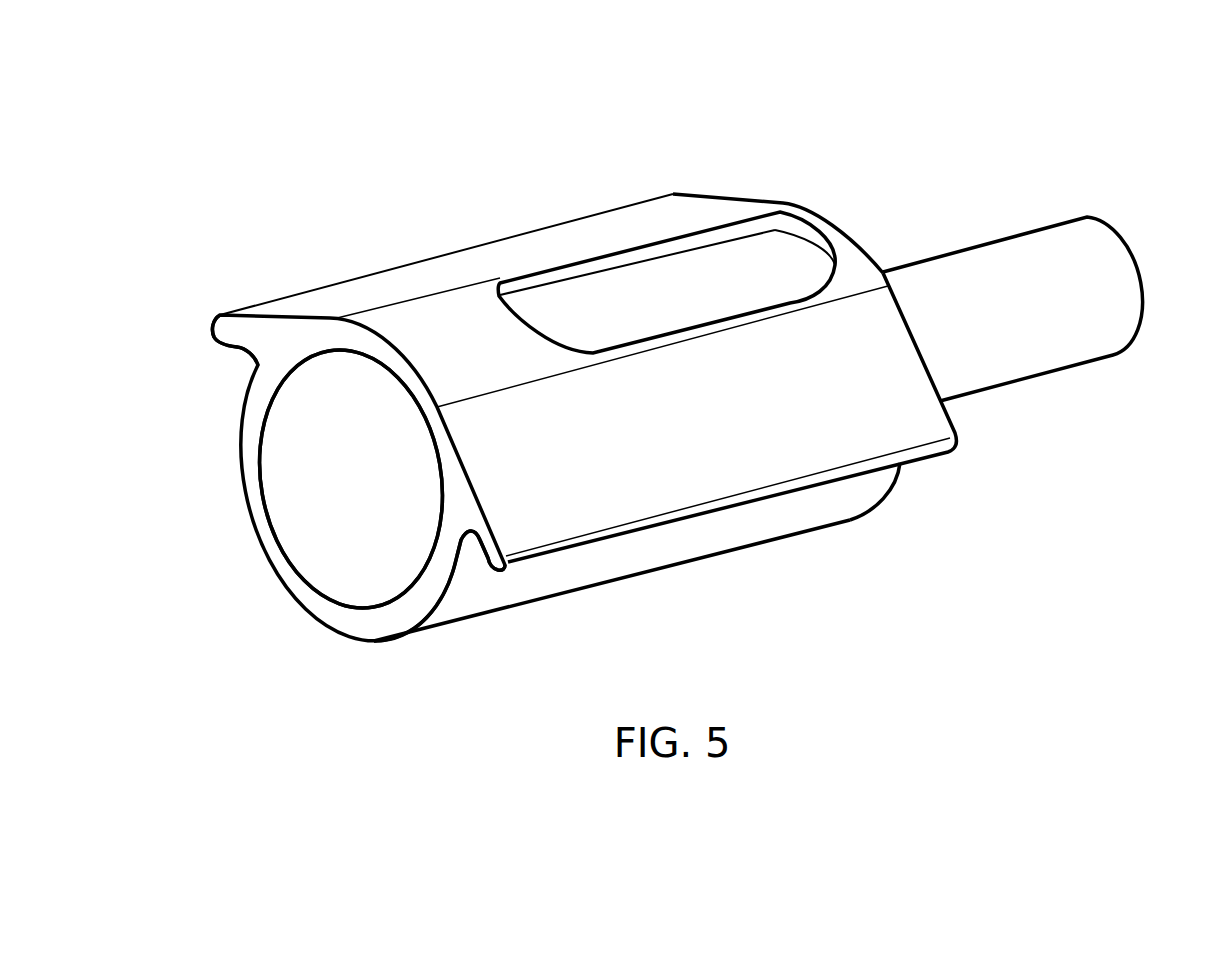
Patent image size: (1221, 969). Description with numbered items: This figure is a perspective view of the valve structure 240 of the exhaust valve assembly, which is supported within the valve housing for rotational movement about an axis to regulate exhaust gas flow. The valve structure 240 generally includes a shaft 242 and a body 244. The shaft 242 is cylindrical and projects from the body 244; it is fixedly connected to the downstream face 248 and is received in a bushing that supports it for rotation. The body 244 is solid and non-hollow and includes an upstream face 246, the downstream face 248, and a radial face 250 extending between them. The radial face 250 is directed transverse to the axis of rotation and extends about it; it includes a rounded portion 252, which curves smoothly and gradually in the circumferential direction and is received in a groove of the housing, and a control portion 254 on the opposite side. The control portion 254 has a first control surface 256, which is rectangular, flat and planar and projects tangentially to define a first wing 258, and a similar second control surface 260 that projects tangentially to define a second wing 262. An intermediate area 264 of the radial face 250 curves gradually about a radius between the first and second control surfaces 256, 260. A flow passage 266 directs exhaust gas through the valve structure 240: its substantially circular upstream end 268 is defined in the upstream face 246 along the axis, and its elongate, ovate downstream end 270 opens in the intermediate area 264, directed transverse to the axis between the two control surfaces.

The valve structure 240 is at (931, 156).
The shaft 242 is at (985, 320).
The body 244 is at (419, 313).
The upstream face 246 is at (243, 447).
The downstream face 248 is at (897, 465).
The radial face 250 is at (721, 546).
The rounded portion 252 is at (458, 606).
The control portion 254 is at (645, 210).
The first control surface 256 is at (565, 237).
The first wing 258 is at (225, 323).
The second control surface 260 is at (645, 451).
The second wing 262 is at (500, 548).
The intermediate area 264 is at (426, 366).
The flow passage 266 is at (300, 504).
The upstream end 268 is at (362, 607).
The downstream end 270 is at (783, 220).